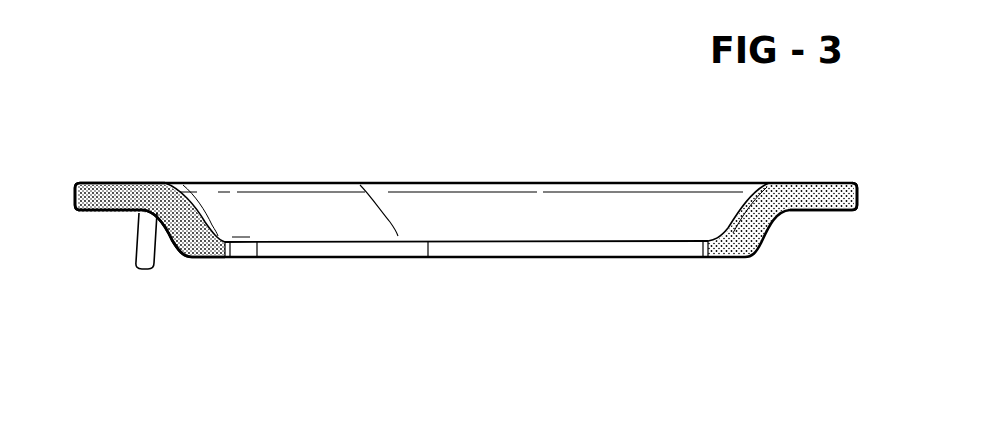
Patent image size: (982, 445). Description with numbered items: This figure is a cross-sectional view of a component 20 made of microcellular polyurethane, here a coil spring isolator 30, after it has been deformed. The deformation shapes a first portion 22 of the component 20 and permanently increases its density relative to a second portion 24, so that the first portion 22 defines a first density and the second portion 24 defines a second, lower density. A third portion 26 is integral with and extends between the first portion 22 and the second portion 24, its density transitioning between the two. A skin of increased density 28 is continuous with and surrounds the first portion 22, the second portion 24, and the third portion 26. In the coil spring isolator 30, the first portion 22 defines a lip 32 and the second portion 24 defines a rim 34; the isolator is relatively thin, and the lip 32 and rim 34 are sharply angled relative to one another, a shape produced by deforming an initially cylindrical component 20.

The component 20 is at (433, 205).
The coil spring isolator 30 is at (580, 190).
The skin of increased density 28 is at (802, 182).
The second portion 24 is at (103, 245).
The rim 34 is at (140, 213).
The third portion 26 is at (141, 270).
The first portion 22 is at (206, 273).
The lip 32 is at (182, 291).